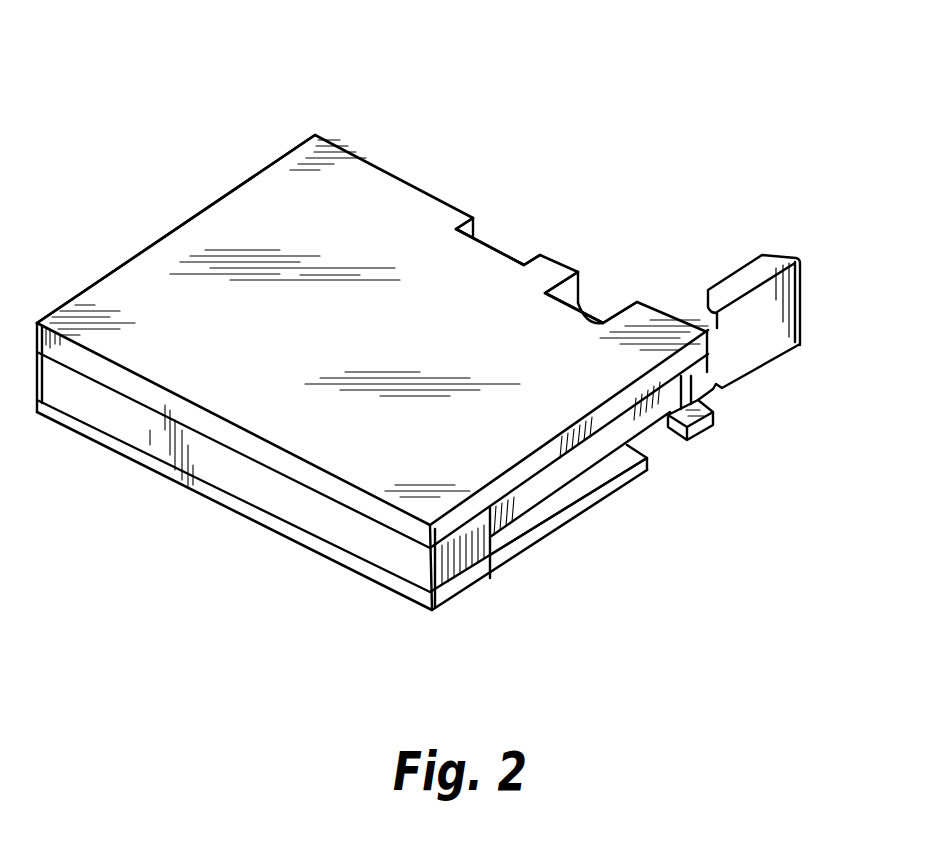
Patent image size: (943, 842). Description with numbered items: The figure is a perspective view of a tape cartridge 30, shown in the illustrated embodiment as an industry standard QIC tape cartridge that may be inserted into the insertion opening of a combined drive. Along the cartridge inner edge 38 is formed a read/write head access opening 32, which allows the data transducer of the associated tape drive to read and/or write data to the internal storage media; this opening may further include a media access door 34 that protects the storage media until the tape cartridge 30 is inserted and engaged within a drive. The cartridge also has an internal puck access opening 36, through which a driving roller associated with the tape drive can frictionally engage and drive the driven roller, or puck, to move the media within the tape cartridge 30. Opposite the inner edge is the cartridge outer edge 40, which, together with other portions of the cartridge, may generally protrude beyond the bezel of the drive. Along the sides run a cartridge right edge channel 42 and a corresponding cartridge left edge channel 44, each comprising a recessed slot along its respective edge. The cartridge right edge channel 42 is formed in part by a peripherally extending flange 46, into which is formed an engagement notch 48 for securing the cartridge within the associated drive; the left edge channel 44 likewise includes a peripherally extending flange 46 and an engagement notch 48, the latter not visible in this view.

The tape cartridge 30 is at (650, 138).
The read/write head access opening 32 is at (588, 300).
The media access door 34 is at (762, 345).
The internal puck access opening 36 is at (491, 242).
The cartridge inner edge 38 is at (410, 180).
The cartridge outer edge 40 is at (279, 502).
The cartridge right edge channel 42 is at (548, 503).
The cartridge left edge channel 44 is at (158, 240).
The peripherally extending flange 46 is at (523, 545).
The engagement notch 48 is at (667, 447).